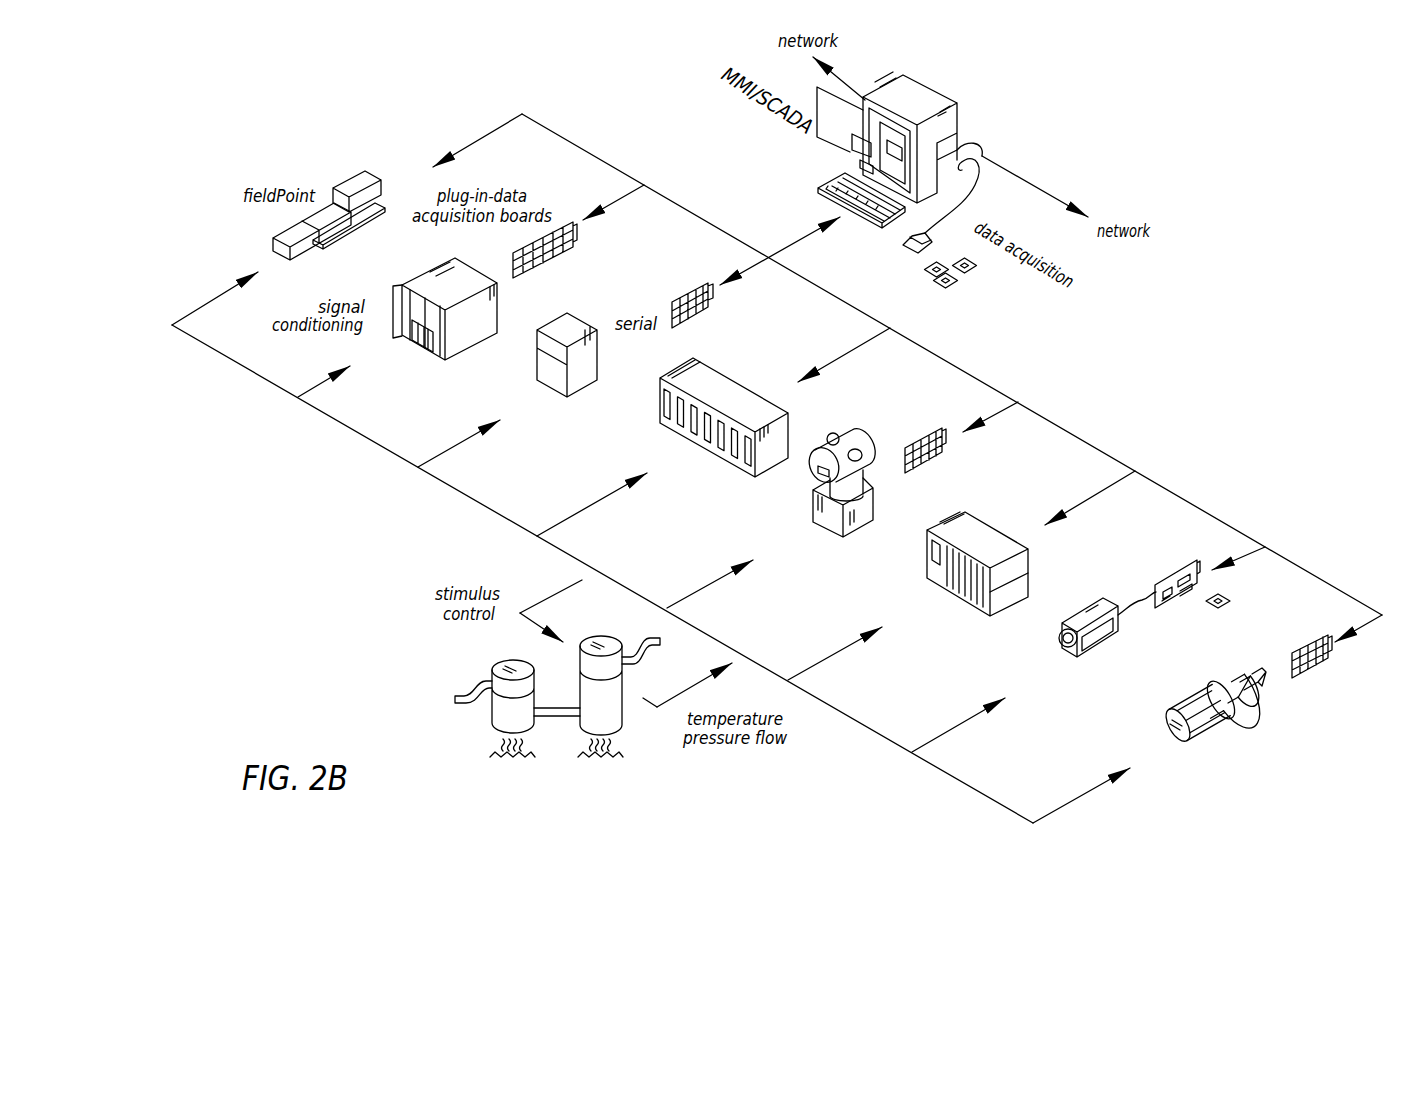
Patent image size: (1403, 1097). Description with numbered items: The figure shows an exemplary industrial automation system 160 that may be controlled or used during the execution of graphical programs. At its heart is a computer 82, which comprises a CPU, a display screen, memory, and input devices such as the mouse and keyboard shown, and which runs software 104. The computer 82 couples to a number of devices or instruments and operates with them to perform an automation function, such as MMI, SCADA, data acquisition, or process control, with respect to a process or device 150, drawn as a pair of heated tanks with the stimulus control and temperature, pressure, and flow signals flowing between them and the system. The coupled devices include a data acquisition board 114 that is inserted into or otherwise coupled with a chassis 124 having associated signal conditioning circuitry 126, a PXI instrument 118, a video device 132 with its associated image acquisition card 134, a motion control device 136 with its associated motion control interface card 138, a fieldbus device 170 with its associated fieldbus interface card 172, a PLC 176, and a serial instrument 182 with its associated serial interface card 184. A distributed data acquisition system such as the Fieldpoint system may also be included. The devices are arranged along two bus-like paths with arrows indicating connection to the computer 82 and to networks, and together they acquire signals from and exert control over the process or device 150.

The industrial automation system 160 is at (1192, 152).
The computer 82 is at (927, 92).
The software 104 is at (952, 288).
The chassis 124 is at (431, 314).
The signal conditioning circuitry 126 is at (418, 347).
The data acquisition board 114 is at (547, 263).
The serial interface card 184 is at (683, 295).
The serial instrument 182 is at (550, 382).
The PLC 176 is at (677, 432).
The fieldbus device 170 is at (828, 523).
The fieldbus interface card 172 is at (920, 443).
The PXI instrument 118 is at (980, 532).
The video device 132 is at (1095, 603).
The image acquisition card 134 is at (1168, 572).
The motion control device 136 is at (1207, 728).
The motion control interface card 138 is at (1317, 673).
The process or device 150 is at (465, 688).